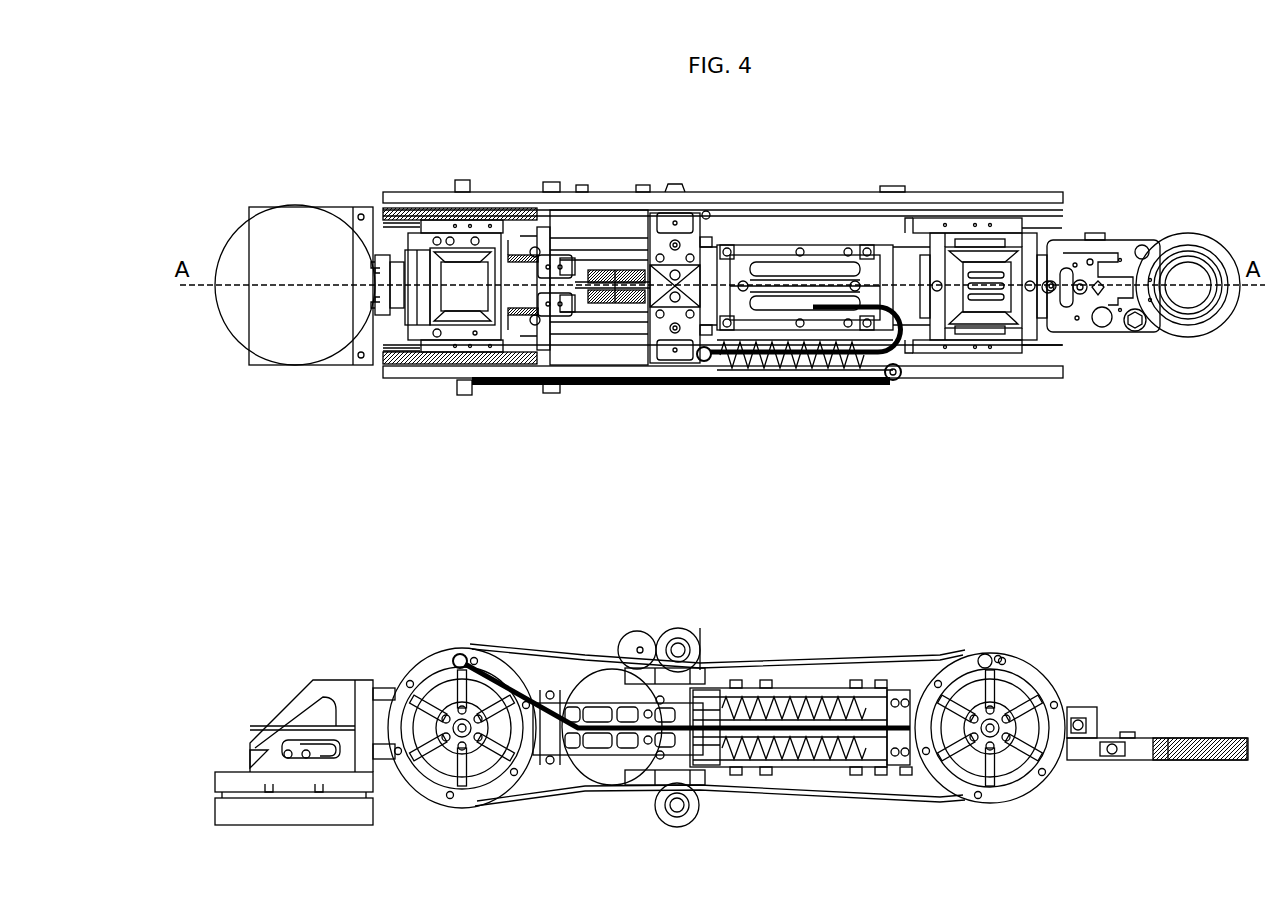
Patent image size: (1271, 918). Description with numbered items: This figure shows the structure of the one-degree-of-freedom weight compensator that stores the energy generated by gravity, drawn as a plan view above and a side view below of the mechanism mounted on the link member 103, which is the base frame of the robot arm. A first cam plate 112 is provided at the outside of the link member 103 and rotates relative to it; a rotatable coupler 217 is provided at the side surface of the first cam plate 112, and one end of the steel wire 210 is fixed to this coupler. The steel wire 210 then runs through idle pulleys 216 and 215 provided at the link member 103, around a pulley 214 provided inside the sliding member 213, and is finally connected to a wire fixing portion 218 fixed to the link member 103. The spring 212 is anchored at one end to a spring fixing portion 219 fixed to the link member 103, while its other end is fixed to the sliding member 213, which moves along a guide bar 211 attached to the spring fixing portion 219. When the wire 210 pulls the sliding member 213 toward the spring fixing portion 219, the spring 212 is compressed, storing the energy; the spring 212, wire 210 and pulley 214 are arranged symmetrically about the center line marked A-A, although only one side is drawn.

The link member 103 is at (900, 657).
The first cam plate 112 is at (415, 660).
The steel wire 210 is at (477, 647).
The guide bar 211 is at (807, 703).
The spring 212 is at (840, 710).
The sliding member 213 is at (715, 700).
The pulley 214 is at (692, 385).
The idle pulley 215 is at (905, 720).
The idle pulley 216 is at (533, 647).
The rotatable coupler 217 is at (467, 647).
The wire fixing portion 218 is at (813, 306).
The spring fixing portion 219 is at (903, 767).